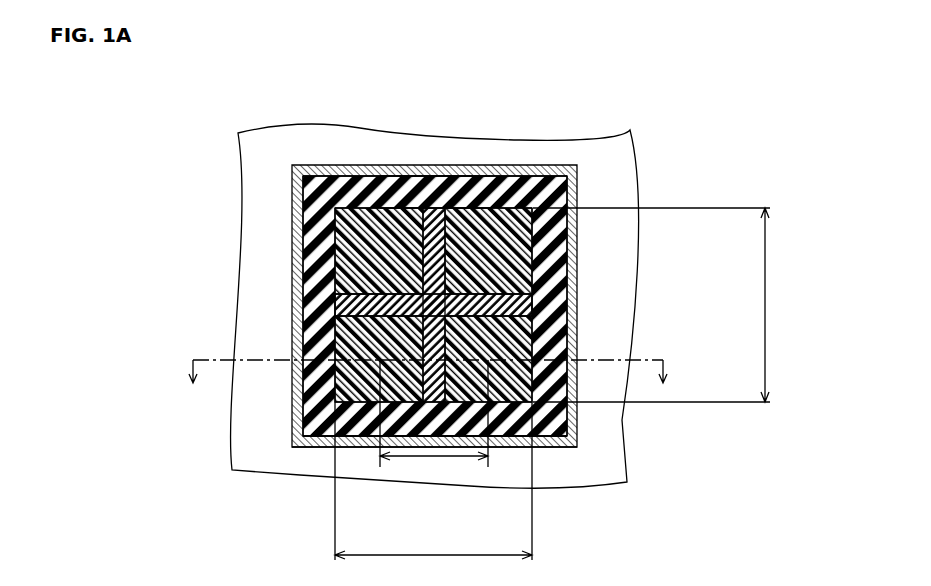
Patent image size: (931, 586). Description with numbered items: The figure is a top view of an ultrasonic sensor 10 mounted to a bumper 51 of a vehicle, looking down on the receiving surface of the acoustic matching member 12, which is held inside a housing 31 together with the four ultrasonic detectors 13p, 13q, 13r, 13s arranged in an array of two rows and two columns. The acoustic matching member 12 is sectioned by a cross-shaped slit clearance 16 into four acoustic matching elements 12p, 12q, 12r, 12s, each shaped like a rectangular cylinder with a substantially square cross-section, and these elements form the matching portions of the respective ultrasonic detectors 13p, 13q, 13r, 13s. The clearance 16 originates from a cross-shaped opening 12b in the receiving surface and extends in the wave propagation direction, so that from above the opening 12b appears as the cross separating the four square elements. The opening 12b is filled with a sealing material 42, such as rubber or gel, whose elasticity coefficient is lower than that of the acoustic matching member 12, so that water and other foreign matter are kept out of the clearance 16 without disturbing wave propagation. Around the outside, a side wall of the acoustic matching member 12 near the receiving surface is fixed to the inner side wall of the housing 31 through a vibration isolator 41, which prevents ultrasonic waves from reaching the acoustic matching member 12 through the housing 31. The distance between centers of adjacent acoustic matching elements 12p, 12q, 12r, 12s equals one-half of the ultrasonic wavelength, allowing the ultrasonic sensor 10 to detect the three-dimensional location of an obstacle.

The ultrasonic sensor 10 is at (610, 104).
The acoustic matching member 12 is at (546, 257).
The cross-shaped opening 12b is at (535, 308).
The acoustic matching element 12p is at (363, 390).
The acoustic matching element 12q is at (513, 390).
The acoustic matching element 12r is at (365, 192).
The acoustic matching element 12s is at (487, 195).
The ultrasonic detector 13p is at (336, 326).
The ultrasonic detector 13q is at (535, 345).
The ultrasonic detector 13r is at (303, 243).
The ultrasonic detector 13s is at (533, 275).
The slit clearance 16 is at (335, 313).
The housing 31 is at (296, 202).
The vibration isolator 41 is at (553, 432).
The sealing material 42 is at (427, 195).
The bumper 51 is at (545, 148).